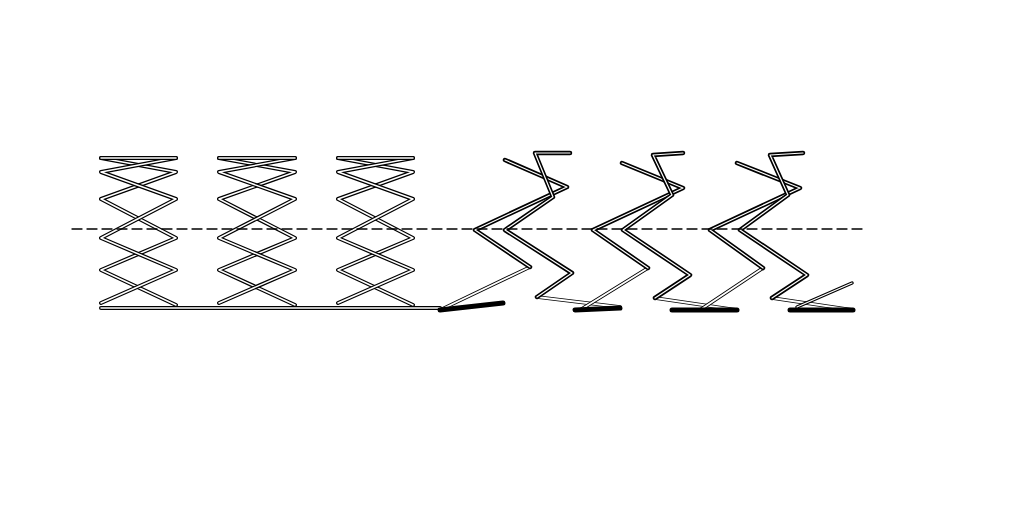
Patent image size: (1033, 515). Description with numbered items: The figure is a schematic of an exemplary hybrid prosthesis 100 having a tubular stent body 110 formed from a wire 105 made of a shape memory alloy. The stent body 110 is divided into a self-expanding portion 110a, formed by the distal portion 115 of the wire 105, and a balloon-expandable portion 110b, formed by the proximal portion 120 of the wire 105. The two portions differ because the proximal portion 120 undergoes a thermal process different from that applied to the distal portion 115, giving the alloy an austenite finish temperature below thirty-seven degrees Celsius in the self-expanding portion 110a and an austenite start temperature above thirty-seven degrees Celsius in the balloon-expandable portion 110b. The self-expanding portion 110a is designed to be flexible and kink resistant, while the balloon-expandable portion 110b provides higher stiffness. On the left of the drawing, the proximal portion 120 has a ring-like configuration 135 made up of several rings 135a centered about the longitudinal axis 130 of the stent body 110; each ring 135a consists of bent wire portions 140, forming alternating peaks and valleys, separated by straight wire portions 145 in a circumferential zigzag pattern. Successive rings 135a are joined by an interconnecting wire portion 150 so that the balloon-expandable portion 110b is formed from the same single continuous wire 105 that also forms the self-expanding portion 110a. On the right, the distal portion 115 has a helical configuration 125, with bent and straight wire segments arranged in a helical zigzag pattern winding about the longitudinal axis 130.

The hybrid prosthesis 100 is at (641, 80).
The tubular stent body 110 is at (641, 80).
The wire 105 is at (673, 170).
The self-expanding portion 110a is at (860, 367).
The distal portion 115 is at (860, 367).
The balloon-expandable portion 110b is at (413, 367).
The proximal portion 120 is at (413, 367).
The helical configuration 125 is at (585, 130).
The longitudinal axis 130 is at (795, 228).
The ring-like configuration 135 is at (342, 127).
The ring 135a is at (137, 157).
The bent wire portion 140 is at (110, 178).
The straight wire portion 145 is at (112, 180).
The interconnecting wire portion 150 is at (252, 312).